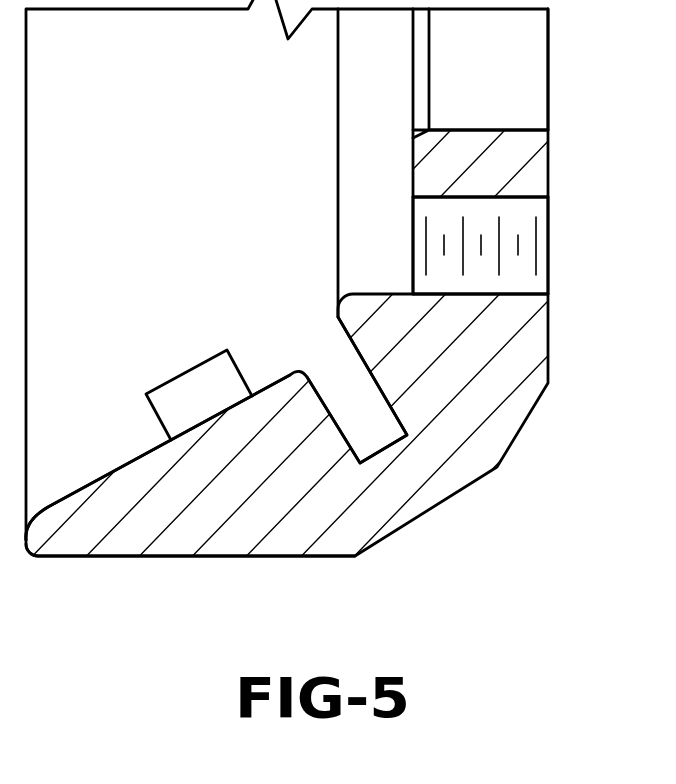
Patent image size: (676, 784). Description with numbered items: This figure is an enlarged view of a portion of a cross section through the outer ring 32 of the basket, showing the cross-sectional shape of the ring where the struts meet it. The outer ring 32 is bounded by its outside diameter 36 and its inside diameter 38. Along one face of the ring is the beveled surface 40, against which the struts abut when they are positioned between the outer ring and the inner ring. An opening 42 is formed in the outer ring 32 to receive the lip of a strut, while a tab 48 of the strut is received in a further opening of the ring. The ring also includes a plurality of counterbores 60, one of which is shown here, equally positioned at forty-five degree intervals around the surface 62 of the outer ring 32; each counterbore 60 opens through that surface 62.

The outer ring 32 is at (425, 507).
The outside diameter 36 is at (242, 557).
The inside diameter 38 is at (490, 131).
The beveled surface 40 is at (148, 453).
The opening 42 is at (367, 372).
The tab 48 is at (180, 374).
The counterbore 60 is at (525, 197).
The surface 62 is at (413, 178).